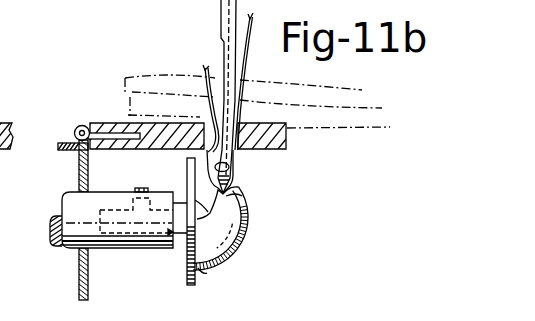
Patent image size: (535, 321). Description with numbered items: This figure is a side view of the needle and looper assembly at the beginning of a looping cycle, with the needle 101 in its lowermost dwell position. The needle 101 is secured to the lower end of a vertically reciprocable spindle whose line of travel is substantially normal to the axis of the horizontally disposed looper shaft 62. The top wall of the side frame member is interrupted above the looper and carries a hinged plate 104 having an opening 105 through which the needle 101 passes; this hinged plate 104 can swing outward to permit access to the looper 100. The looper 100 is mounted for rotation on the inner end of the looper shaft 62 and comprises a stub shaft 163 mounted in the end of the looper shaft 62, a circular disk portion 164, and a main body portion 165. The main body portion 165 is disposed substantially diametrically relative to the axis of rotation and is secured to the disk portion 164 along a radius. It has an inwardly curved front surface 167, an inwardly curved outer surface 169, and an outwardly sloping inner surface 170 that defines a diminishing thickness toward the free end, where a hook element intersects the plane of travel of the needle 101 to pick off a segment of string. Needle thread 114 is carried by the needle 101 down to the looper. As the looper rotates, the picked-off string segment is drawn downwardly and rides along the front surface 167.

The needle 101 is at (221, 34).
The needle thread 114 is at (247, 68).
The opening 105 is at (240, 127).
The hinged plate 104 is at (287, 145).
The inner surface 170 is at (193, 195).
The front surface 167 is at (240, 193).
The main body portion 165 is at (248, 212).
The outer surface 169 is at (242, 240).
The looper 100 is at (238, 257).
The circular disk portion 164 is at (203, 277).
The stub shaft 163 is at (180, 250).
The looper shaft 62 is at (77, 247).